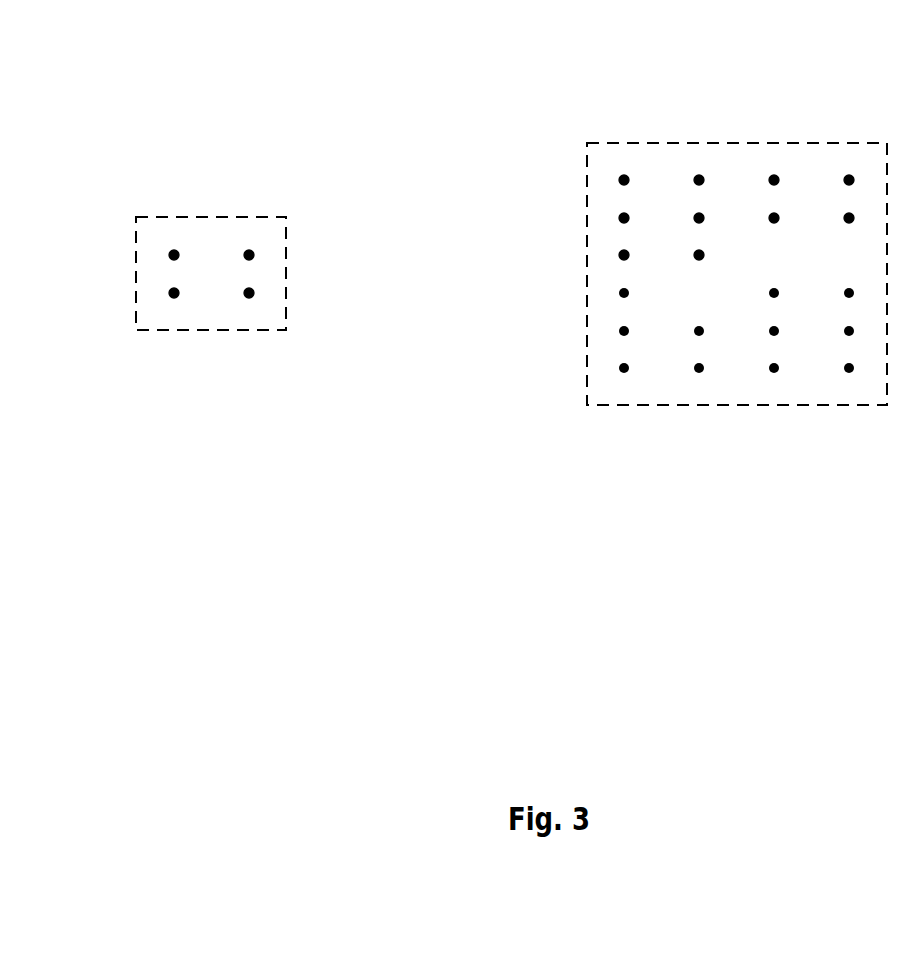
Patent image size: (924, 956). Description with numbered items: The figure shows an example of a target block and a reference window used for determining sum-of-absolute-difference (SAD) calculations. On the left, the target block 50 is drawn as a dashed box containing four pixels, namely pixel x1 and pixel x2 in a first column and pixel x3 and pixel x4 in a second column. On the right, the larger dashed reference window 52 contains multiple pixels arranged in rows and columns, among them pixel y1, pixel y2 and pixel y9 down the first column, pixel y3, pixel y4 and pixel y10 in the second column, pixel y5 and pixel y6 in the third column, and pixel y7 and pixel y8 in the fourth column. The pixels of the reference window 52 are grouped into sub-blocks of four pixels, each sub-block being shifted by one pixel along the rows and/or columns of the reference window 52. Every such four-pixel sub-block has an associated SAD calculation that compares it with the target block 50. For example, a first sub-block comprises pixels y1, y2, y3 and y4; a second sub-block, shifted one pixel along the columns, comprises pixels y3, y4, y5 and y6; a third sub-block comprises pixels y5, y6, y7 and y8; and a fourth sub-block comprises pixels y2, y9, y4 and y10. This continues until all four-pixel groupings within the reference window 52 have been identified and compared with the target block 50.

The target block 50 is at (168, 217).
The reference window 52 is at (623, 142).
The pixel x1 is at (170, 253).
The pixel x2 is at (170, 292).
The pixel x3 is at (258, 255).
The pixel x4 is at (258, 293).
The pixel y1 is at (620, 180).
The pixel y2 is at (620, 217).
The pixel y3 is at (702, 171).
The pixel y4 is at (706, 223).
The pixel y5 is at (777, 171).
The pixel y6 is at (781, 223).
The pixel y7 is at (852, 171).
The pixel y8 is at (857, 223).
The pixel y9 is at (620, 255).
The pixel y10 is at (704, 261).